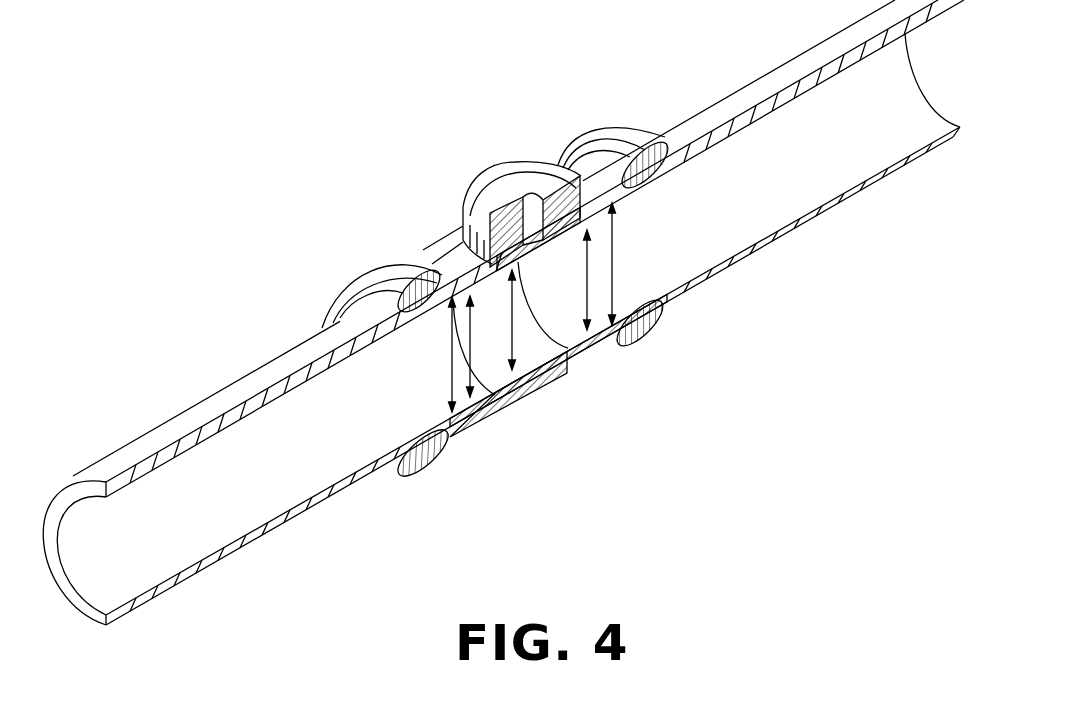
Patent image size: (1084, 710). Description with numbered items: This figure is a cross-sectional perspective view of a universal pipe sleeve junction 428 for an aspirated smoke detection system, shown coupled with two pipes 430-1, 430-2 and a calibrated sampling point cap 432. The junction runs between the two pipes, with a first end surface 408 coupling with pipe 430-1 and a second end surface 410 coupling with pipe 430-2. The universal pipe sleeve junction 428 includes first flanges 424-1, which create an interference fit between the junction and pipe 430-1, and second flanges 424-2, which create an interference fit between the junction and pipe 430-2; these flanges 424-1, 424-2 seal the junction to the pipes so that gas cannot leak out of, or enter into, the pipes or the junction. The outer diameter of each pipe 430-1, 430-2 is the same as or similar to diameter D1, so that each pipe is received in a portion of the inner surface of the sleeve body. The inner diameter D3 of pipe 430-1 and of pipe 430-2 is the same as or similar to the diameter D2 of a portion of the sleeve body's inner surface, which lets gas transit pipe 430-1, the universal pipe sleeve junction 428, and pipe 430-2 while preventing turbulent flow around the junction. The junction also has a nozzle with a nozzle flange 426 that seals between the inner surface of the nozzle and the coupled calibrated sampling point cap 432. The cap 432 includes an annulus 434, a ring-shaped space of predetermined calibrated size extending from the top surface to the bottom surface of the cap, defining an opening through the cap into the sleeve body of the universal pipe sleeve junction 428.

The first end surface 408 is at (350, 297).
The second end surface 410 is at (688, 140).
The first flanges 424-1 is at (437, 277).
The second flanges 424-2 is at (640, 145).
The nozzle flange 426 is at (517, 215).
The universal pipe sleeve junction 428 is at (434, 236).
The pipe 430-1 is at (258, 538).
The pipe 430-2 is at (863, 190).
The calibrated sampling point cap 432 is at (478, 196).
The annulus 434 is at (522, 197).
The diameter D1 is at (531, 307).
The diameter D2 is at (526, 320).
The inner diameter D3 is at (529, 313).